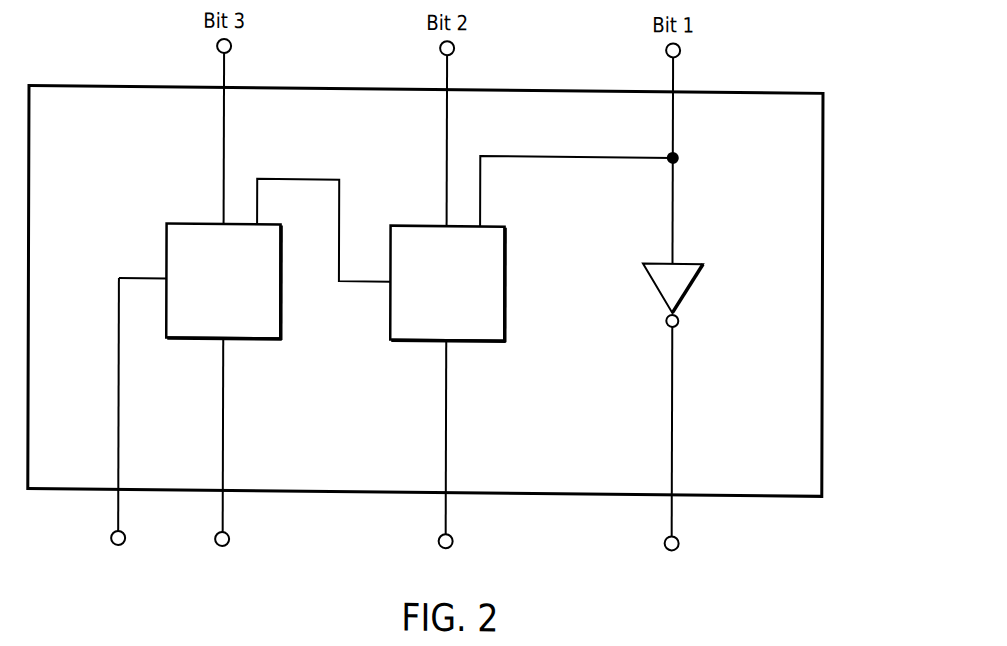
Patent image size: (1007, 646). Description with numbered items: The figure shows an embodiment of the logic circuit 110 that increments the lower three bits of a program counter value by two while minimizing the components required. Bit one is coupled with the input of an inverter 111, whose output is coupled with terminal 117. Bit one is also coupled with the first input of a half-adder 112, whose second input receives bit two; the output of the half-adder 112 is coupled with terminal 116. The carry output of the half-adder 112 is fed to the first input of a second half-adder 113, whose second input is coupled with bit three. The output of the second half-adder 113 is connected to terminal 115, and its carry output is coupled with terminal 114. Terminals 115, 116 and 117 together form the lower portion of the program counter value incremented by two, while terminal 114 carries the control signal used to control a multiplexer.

The logic circuit 110 is at (823, 212).
The inverter 111 is at (690, 286).
The half-adder 112 is at (506, 280).
The second half-adder 113 is at (258, 339).
The terminal 114 is at (124, 543).
The terminal 115 is at (229, 544).
The terminal 116 is at (452, 544).
The terminal 117 is at (677, 546).